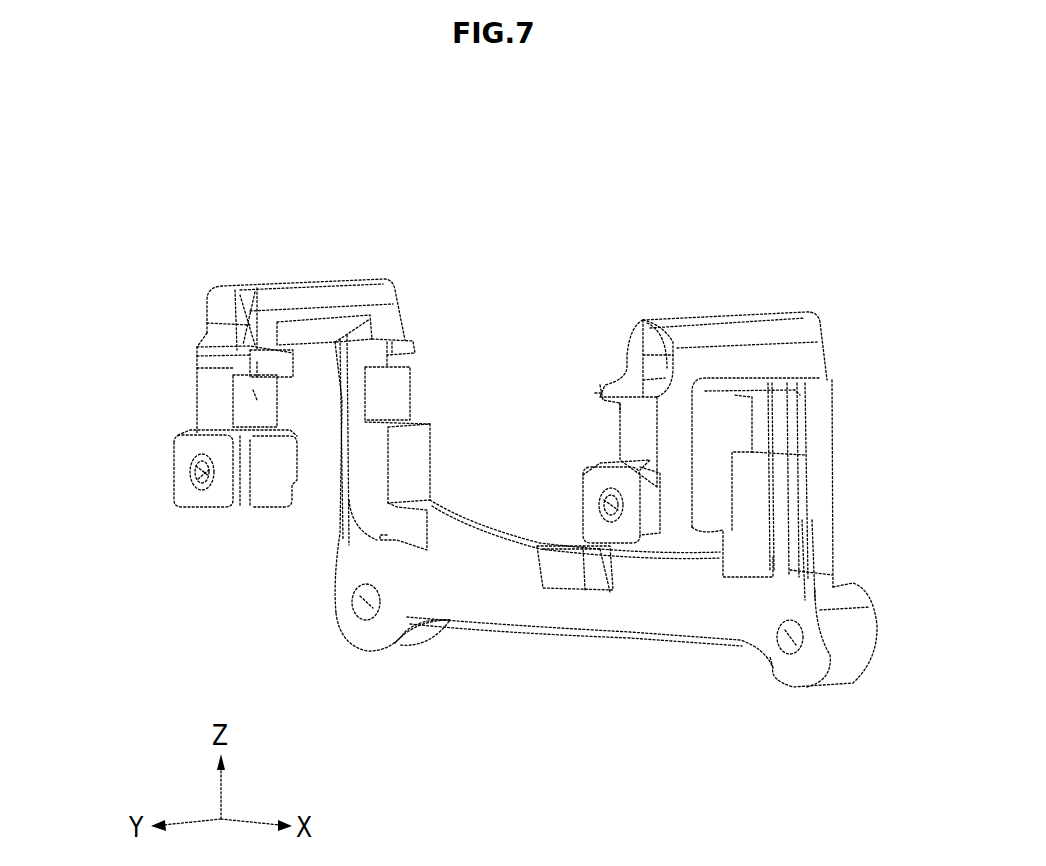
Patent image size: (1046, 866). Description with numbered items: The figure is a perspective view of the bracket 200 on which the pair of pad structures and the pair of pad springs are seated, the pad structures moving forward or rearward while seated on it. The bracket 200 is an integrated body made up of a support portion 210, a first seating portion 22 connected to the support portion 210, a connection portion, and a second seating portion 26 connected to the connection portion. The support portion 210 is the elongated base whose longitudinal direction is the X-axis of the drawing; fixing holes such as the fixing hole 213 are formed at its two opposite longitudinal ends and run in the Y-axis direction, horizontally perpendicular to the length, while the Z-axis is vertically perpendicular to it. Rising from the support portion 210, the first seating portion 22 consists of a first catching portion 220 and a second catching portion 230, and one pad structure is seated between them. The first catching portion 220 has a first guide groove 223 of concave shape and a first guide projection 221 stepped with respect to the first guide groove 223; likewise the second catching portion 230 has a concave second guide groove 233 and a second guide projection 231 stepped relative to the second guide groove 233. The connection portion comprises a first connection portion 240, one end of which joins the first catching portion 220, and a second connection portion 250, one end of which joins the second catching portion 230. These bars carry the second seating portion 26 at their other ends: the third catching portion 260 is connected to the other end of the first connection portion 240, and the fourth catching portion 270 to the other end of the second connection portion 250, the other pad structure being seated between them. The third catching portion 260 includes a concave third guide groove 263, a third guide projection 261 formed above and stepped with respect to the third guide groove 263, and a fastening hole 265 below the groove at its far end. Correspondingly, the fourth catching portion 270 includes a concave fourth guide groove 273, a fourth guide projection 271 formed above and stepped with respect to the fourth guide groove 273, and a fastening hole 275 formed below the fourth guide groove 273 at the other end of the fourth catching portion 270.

The bracket 200 is at (243, 167).
The support portion 210 is at (593, 617).
The fixing hole 213 is at (800, 635).
The first catching portion 220 is at (373, 467).
The first guide projection 221 is at (410, 341).
The first guide groove 223 is at (400, 395).
The second catching portion 230 is at (815, 427).
The second guide projection 231 is at (800, 395).
The second guide groove 233 is at (750, 440).
The first connection portion 240 is at (317, 290).
The second connection portion 250 is at (762, 332).
The third catching portion 260 is at (203, 378).
The third guide projection 261 is at (265, 318).
The third guide groove 263 is at (235, 402).
The fastening hole 265 is at (185, 478).
The fourth catching portion 270 is at (643, 322).
The fourth guide projection 271 is at (598, 393).
The fourth guide groove 273 is at (603, 438).
The fastening hole 275 is at (605, 505).
The first seating portion 22 is at (448, 415).
The second seating portion 26 is at (912, 588).